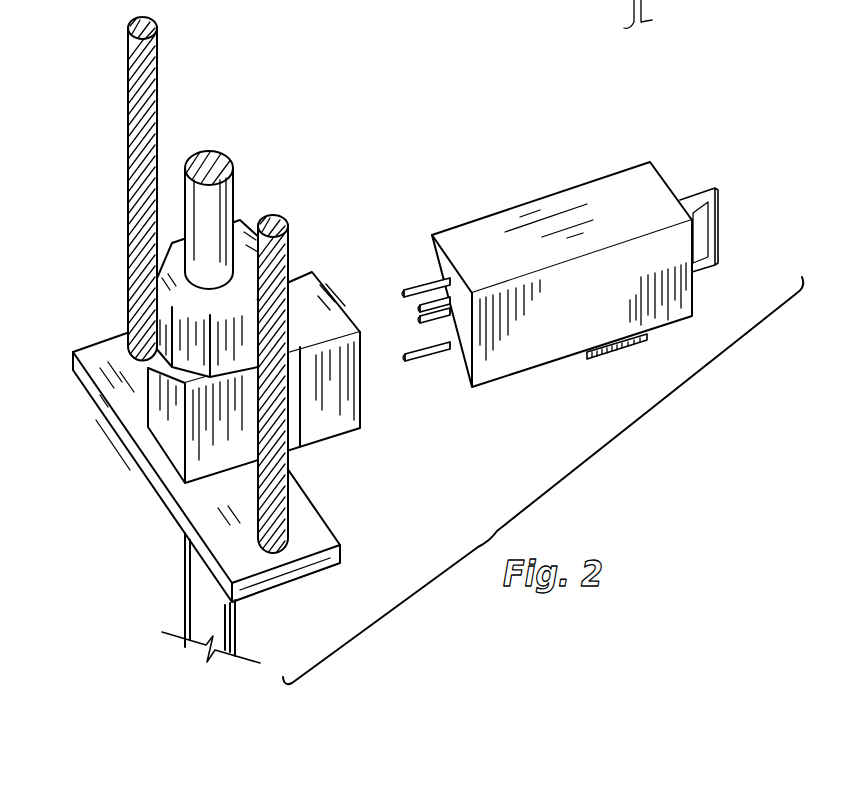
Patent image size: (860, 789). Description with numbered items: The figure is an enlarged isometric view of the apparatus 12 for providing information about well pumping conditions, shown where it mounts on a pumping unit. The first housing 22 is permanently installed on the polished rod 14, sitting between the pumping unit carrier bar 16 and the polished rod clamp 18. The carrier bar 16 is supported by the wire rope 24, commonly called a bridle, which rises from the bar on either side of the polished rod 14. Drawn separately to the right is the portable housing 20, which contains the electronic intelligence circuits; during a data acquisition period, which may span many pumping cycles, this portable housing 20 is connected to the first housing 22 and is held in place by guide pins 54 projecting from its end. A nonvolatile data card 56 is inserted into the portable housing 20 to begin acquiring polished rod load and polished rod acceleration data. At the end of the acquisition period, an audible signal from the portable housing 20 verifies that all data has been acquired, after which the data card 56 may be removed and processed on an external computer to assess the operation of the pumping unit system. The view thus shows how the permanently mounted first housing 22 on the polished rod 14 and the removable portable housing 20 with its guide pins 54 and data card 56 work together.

The apparatus for providing information as to well pumping conditions 12 is at (513, 165).
The polished rod 14 is at (225, 192).
The carrier bar 16 is at (320, 537).
The polished rod clamp 18 is at (180, 330).
The portable housing 20 is at (597, 187).
The first housing 22 is at (331, 303).
The wire rope 24 is at (132, 118).
The guide pins 54 is at (410, 290).
The nonvolatile data card 56 is at (607, 358).